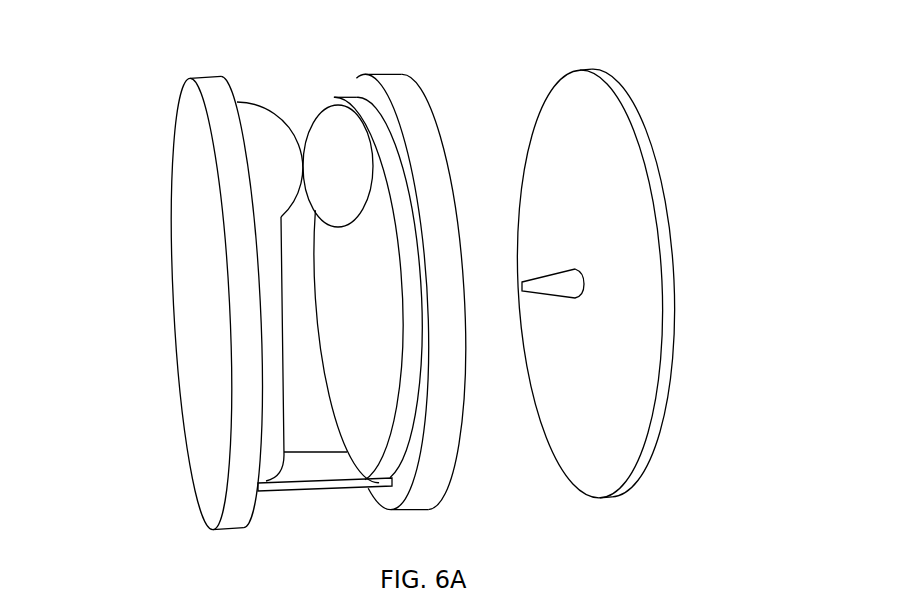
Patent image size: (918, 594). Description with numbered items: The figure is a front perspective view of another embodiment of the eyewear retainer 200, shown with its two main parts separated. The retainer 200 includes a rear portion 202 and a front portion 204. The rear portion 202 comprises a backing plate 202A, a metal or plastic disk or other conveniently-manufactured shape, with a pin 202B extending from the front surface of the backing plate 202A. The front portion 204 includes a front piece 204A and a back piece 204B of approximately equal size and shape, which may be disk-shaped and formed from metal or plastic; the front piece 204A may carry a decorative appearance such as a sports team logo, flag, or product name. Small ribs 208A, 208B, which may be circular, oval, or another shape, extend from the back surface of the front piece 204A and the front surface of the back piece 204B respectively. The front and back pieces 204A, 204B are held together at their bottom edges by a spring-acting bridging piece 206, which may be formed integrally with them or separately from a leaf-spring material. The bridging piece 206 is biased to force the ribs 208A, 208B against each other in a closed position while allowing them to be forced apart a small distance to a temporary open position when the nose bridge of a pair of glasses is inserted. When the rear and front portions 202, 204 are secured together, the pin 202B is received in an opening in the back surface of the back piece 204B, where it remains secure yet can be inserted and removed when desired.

The eyewear retainer 200 is at (142, 87).
The rear portion 202 is at (680, 189).
The backing plate 202A is at (674, 340).
The pin 202B is at (515, 280).
The front portion 204 is at (145, 422).
The front piece 204A is at (173, 206).
The back piece 204B is at (447, 470).
The bridging piece 206 is at (320, 492).
The rib 208A is at (240, 100).
The rib 208B is at (315, 106).